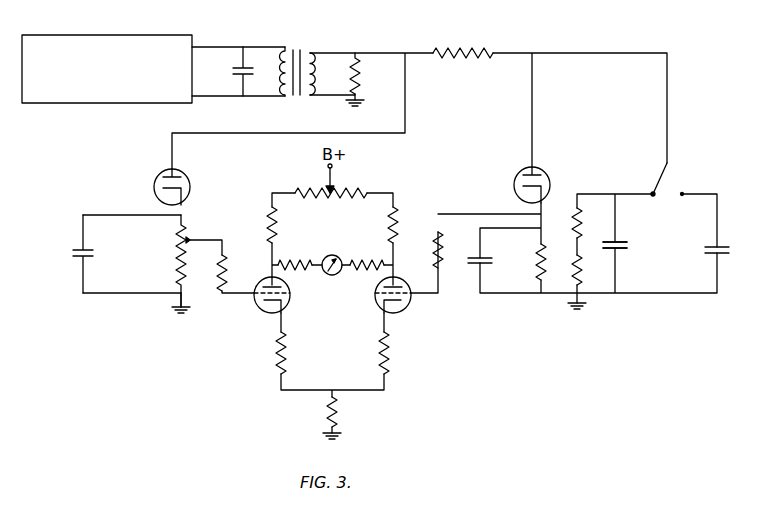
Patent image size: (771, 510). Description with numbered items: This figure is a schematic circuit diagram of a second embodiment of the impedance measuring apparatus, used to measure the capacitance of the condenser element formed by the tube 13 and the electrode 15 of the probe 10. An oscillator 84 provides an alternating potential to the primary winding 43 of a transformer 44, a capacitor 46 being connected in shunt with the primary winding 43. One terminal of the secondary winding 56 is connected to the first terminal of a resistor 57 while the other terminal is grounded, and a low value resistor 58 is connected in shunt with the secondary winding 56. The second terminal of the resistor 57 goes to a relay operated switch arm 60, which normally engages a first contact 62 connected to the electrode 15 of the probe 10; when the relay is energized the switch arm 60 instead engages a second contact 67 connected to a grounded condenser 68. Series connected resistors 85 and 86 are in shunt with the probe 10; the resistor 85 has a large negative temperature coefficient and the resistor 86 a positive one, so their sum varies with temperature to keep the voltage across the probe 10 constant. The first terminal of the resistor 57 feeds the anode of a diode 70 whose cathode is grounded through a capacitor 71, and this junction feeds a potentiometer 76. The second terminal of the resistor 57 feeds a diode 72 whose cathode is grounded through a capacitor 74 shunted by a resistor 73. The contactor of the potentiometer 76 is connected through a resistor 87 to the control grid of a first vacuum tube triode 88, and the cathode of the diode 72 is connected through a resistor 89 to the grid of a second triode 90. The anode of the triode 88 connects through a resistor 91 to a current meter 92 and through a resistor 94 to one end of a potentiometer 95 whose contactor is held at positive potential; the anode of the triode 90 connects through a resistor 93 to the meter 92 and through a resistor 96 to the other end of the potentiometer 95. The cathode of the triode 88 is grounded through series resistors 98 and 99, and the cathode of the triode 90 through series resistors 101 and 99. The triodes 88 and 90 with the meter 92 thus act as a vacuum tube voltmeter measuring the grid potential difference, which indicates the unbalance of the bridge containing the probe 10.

The oscillator 84 is at (105, 38).
The capacitor 46 is at (229, 73).
The transformer 44 is at (299, 43).
The primary winding 43 is at (272, 87).
The secondary winding 56 is at (316, 61).
The low value resistor 58 is at (360, 76).
The resistor 57 is at (464, 59).
The diode 70 is at (198, 189).
The capacitor 71 is at (71, 253).
The potentiometer 76 is at (177, 256).
The resistor 87 is at (225, 258).
The first vacuum tube triode 88 is at (257, 308).
The second vacuum tube triode 90 is at (409, 306).
The resistor 91 is at (306, 258).
The current meter 92 is at (335, 276).
The resistor 93 is at (372, 257).
The resistor 94 is at (279, 235).
The potentiometer 95 is at (355, 190).
The resistor 96 is at (404, 211).
The resistor 98 is at (293, 352).
The resistor 101 is at (390, 368).
The resistor 99 is at (340, 417).
The resistor 89 is at (446, 247).
The capacitor 74 is at (493, 266).
The diode 72 is at (548, 173).
The resistor 73 is at (546, 258).
The resistor 85 is at (571, 222).
The resistor 86 is at (582, 266).
The electrode 15 is at (609, 238).
The tube 13 is at (623, 252).
The probe 10 is at (636, 238).
The relay operated switch arm 60 is at (661, 179).
The first contact 62 is at (650, 191).
The second contact 67 is at (682, 193).
The condenser 68 is at (702, 249).